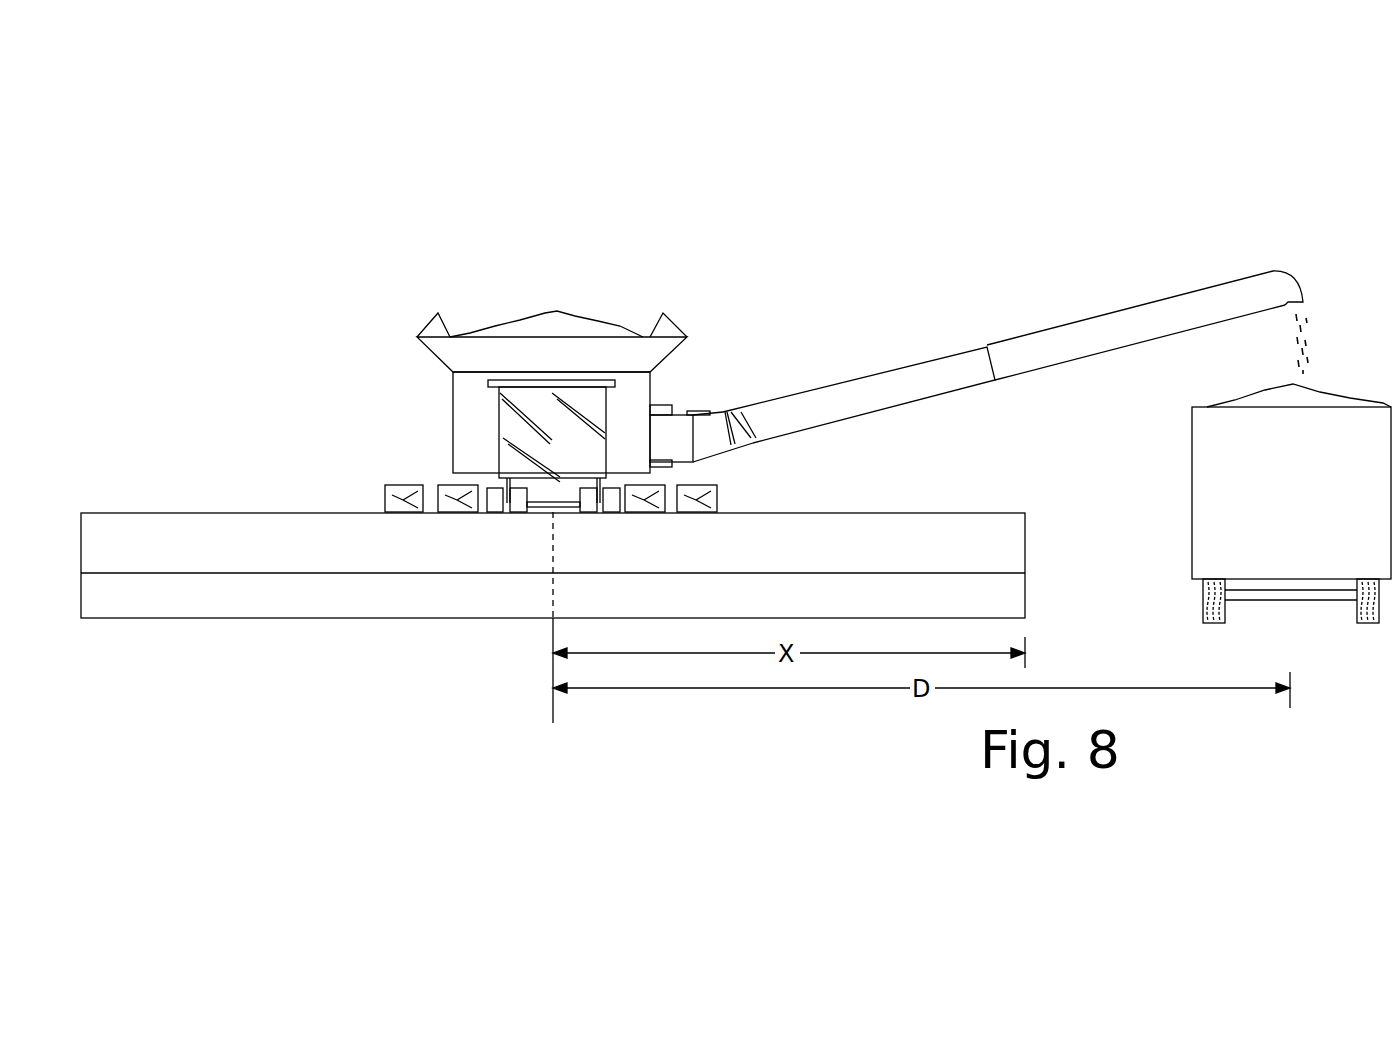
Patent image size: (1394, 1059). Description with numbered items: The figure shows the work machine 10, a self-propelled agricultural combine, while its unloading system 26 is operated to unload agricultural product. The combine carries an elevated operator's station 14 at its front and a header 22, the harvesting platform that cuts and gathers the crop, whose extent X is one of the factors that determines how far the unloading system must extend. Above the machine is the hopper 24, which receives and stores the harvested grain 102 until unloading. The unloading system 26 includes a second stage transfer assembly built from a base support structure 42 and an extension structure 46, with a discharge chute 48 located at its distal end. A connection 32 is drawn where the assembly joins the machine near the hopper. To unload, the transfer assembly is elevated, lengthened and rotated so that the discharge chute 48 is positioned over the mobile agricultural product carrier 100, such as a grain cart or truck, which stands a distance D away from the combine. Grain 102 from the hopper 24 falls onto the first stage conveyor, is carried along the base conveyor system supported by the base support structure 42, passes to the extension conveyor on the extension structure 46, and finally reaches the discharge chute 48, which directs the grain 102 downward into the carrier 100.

The work machine 10 is at (567, 148).
The operator's station 14 is at (581, 441).
The header 22 is at (225, 513).
The hopper 24 is at (430, 327).
The unloading system 26 is at (1185, 182).
The conveyor inlet housing 32 is at (662, 412).
The base support structure 42 is at (878, 376).
The extension structure 46 is at (1075, 318).
The discharge chute 48 is at (1300, 282).
The mobile agricultural product carrier 100 is at (1192, 457).
The grain 102 is at (563, 313).